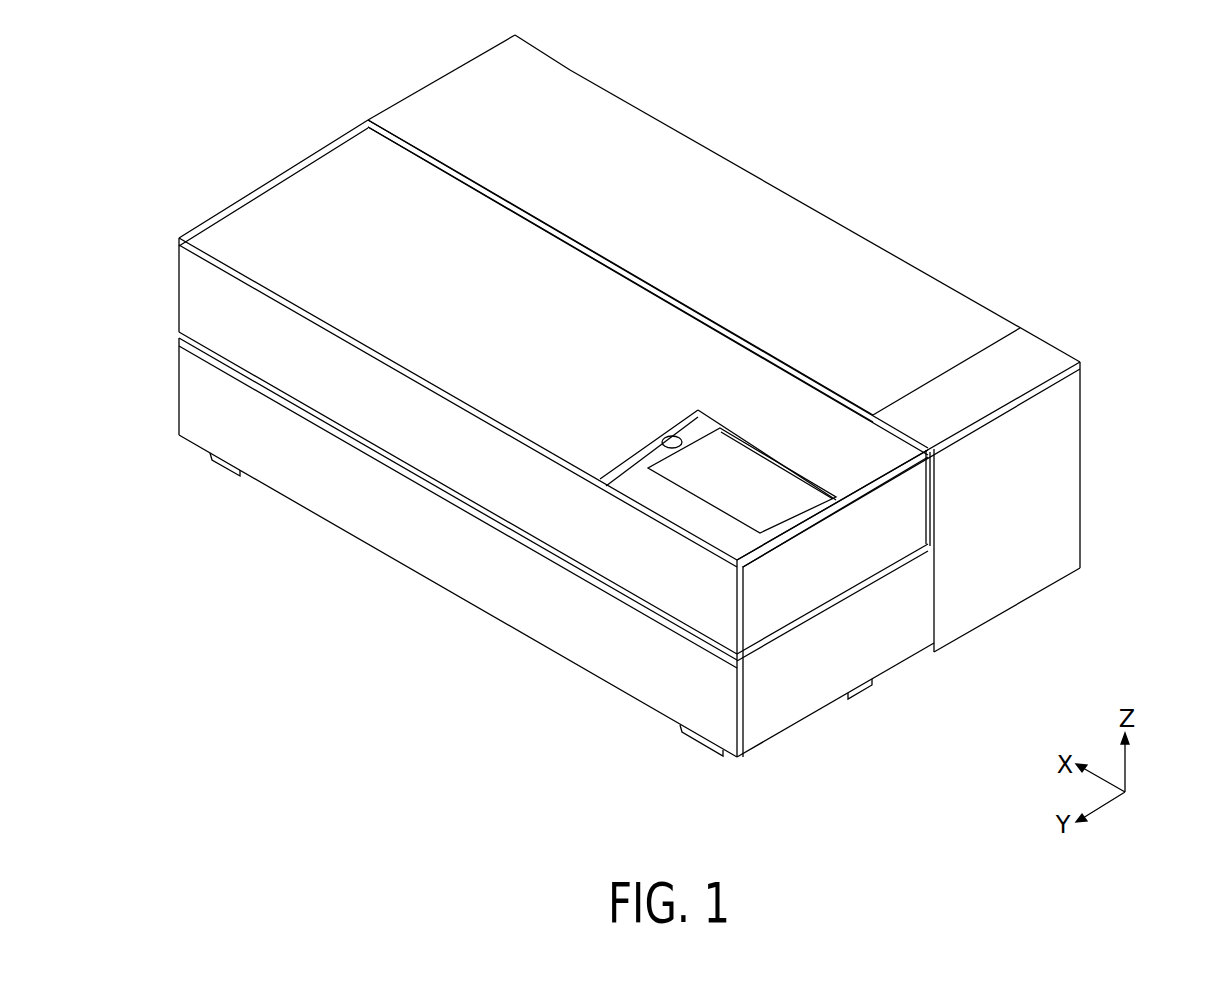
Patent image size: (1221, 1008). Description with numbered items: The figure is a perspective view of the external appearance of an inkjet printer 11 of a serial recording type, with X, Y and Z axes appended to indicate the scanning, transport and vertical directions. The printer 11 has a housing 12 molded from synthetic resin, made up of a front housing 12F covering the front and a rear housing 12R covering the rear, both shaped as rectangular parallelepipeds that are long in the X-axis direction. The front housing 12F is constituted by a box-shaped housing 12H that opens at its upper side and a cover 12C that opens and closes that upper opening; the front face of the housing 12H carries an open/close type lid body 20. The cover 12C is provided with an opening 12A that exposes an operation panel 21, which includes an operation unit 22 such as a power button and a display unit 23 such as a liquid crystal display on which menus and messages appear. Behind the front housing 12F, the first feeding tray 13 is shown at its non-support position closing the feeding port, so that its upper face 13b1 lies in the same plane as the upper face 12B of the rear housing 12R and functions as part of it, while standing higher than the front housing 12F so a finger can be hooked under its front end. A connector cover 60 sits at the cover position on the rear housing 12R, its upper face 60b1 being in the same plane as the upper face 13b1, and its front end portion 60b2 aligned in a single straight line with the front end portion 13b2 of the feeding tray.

The printer 11 is at (669, 422).
The housing 12 is at (669, 395).
The opening 12A is at (554, 454).
The upper face 12B is at (948, 476).
The cover 12C is at (870, 552).
The front housing 12F is at (835, 742).
The housing 12H is at (815, 688).
The rear housing 12R is at (1072, 462).
The first feeding tray 13 is at (752, 237).
The upper face 13b1 is at (607, 110).
The front end portion 13b2 is at (522, 213).
The lid body 20 is at (556, 589).
The operation panel 21 is at (718, 436).
The operation unit 22 is at (666, 438).
The display unit 23 is at (755, 462).
The connector cover 60 is at (478, 81).
The upper face 60b1 is at (533, 58).
The front end portion 60b2 is at (390, 134).